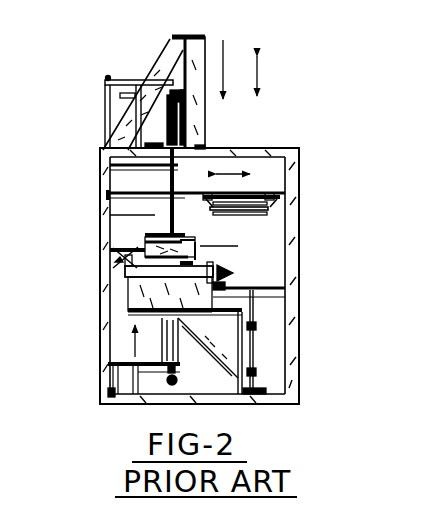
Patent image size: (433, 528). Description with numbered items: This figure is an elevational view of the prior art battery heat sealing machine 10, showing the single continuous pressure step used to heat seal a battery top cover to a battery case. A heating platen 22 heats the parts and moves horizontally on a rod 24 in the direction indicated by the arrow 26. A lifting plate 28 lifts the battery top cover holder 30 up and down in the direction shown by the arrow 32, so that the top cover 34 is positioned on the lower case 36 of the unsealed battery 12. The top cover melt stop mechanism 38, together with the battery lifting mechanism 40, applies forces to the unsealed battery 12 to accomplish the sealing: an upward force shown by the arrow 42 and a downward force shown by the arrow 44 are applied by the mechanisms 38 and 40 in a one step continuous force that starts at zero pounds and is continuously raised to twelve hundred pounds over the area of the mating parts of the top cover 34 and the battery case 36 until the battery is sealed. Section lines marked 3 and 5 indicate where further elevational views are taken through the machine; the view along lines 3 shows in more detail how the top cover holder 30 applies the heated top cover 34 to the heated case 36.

The prior art battery heat sealing machine 10 is at (90, 105).
The unsealed battery 12 is at (235, 249).
The heating platen 22 is at (262, 216).
The rod 24 is at (270, 186).
The arrow 26 is at (243, 166).
The lifting plate 28 is at (137, 172).
The battery top cover holder 30 is at (153, 223).
The arrow 32 is at (262, 72).
The top cover 34 is at (190, 244).
The lower case 36 is at (112, 294).
The top cover melt stop mechanism 38 is at (191, 172).
The battery lifting mechanism 40 is at (91, 311).
The arrow 42 is at (133, 336).
The arrow 44 is at (226, 70).
The section line 3— 3 is at (170, 210).
The section line 5 is at (157, 225).